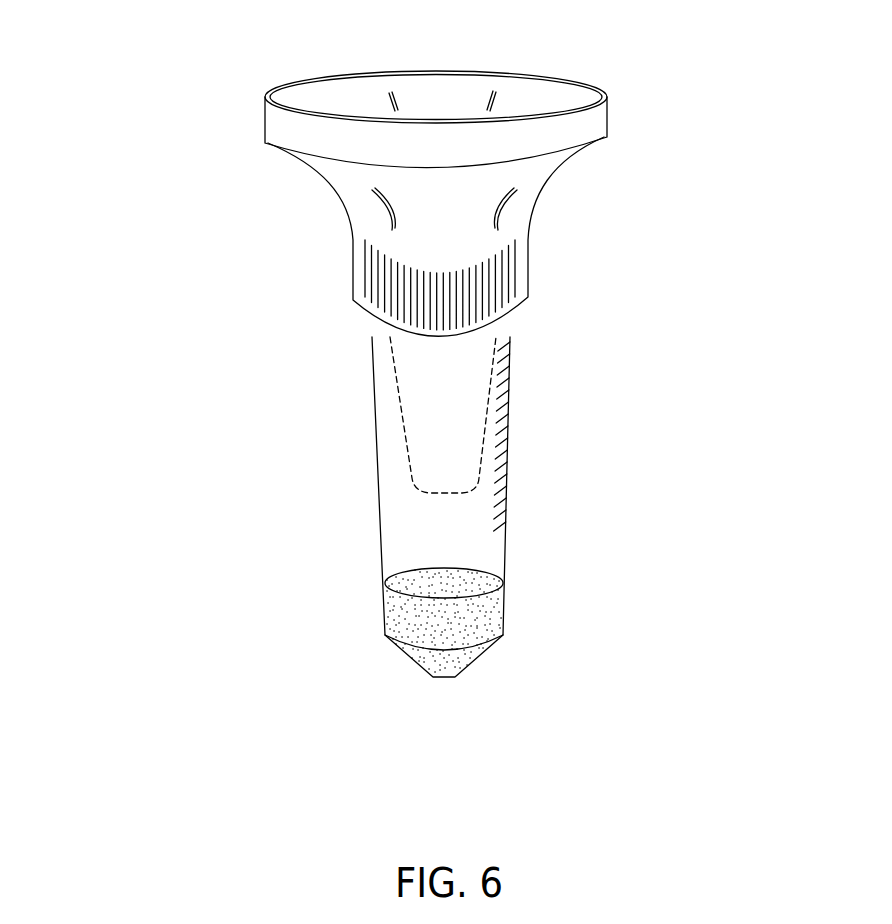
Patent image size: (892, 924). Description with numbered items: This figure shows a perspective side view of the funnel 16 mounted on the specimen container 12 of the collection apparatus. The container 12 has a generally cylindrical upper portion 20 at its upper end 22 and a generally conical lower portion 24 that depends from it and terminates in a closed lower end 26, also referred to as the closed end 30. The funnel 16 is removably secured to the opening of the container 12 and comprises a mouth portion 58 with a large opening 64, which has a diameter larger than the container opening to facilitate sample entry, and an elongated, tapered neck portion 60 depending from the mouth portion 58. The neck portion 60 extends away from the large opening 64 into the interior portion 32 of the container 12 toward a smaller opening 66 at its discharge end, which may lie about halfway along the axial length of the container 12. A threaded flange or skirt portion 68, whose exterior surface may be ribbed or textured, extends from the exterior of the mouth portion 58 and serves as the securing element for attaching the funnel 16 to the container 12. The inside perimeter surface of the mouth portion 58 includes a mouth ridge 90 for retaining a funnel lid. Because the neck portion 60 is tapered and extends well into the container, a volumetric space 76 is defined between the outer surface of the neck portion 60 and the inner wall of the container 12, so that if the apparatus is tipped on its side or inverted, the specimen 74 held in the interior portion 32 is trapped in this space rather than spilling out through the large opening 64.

The container 12 is at (208, 475).
The funnel 16 is at (140, 178).
The upper portion 20 is at (508, 442).
The upper end 22 is at (720, 230).
The lower portion 24 is at (473, 658).
The lower end 26 is at (426, 711).
The closed end 30 is at (443, 722).
The interior portion 32 is at (470, 530).
The mouth portion 58 is at (595, 125).
The neck portion 60 is at (507, 430).
The large opening 64 is at (447, 88).
The smaller opening 66 is at (443, 497).
The threaded flange or skirt portion 68 is at (503, 282).
The specimen 74 is at (475, 618).
The volumetric space 76 is at (388, 455).
The mouth ridge 90 is at (350, 73).